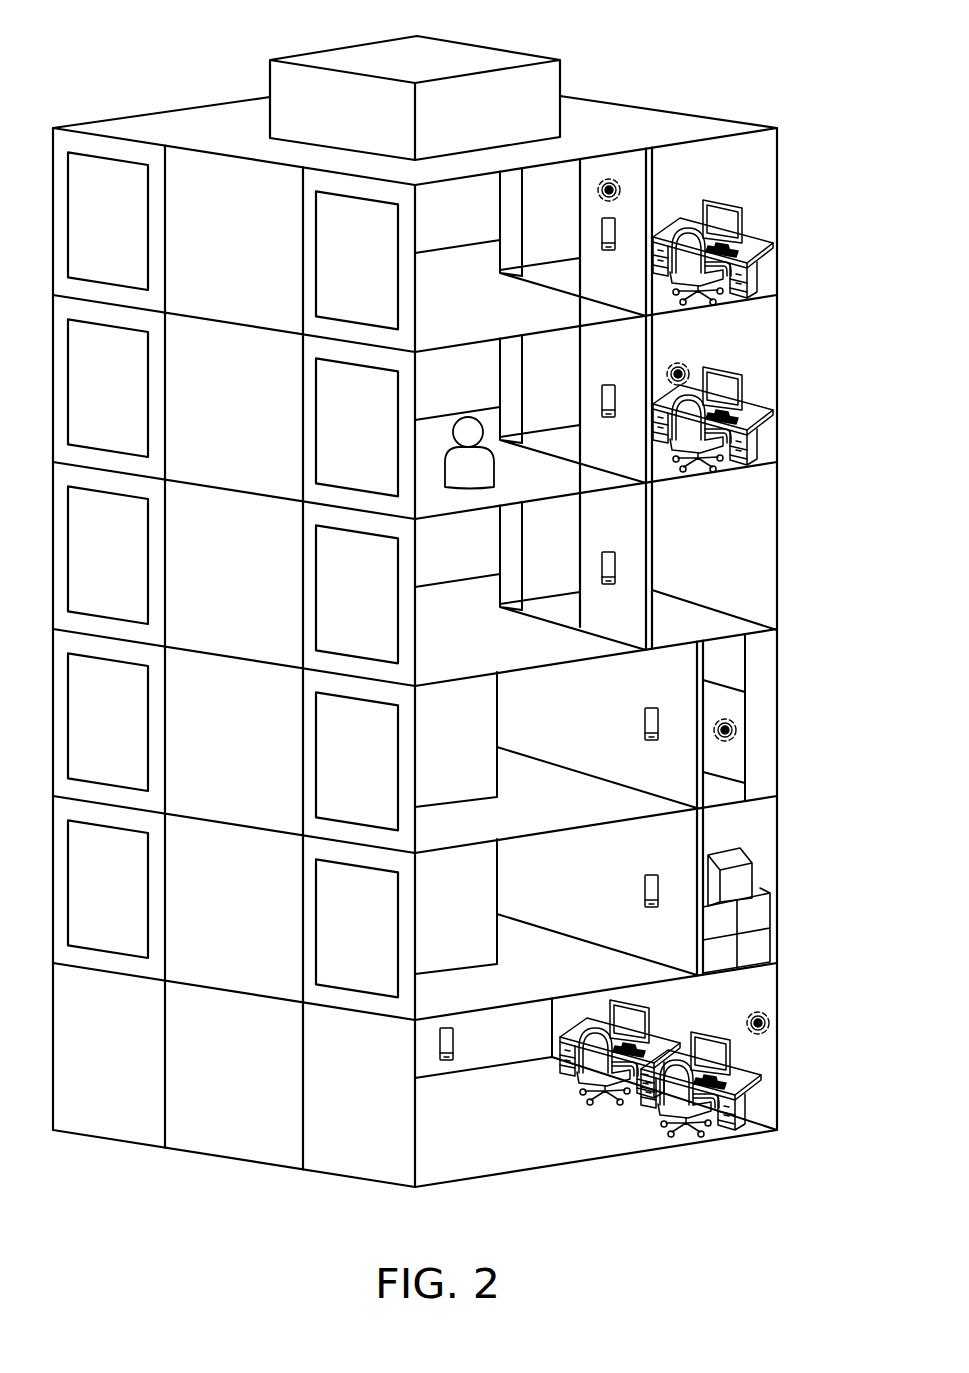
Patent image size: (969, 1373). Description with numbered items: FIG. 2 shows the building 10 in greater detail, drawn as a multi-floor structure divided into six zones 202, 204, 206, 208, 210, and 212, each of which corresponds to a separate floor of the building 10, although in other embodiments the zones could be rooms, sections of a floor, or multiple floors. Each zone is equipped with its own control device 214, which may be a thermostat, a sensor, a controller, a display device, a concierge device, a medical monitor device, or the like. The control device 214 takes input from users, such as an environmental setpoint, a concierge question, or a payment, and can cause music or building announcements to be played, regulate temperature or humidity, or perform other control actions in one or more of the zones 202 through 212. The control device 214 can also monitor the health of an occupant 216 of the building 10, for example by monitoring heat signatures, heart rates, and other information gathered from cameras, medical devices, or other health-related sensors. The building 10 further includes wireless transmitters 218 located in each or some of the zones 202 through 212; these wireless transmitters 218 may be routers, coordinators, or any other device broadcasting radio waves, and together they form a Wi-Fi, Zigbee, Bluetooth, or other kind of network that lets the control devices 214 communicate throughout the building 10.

The building 10 is at (101, 75).
The zone 202 is at (808, 228).
The zone 204 is at (808, 412).
The zone 206 is at (808, 580).
The zone 208 is at (808, 743).
The zone 210 is at (808, 913).
The zone 212 is at (801, 1106).
The control device 214 is at (601, 233).
The occupant 216 is at (483, 473).
The wireless transmitter 218 is at (622, 186).